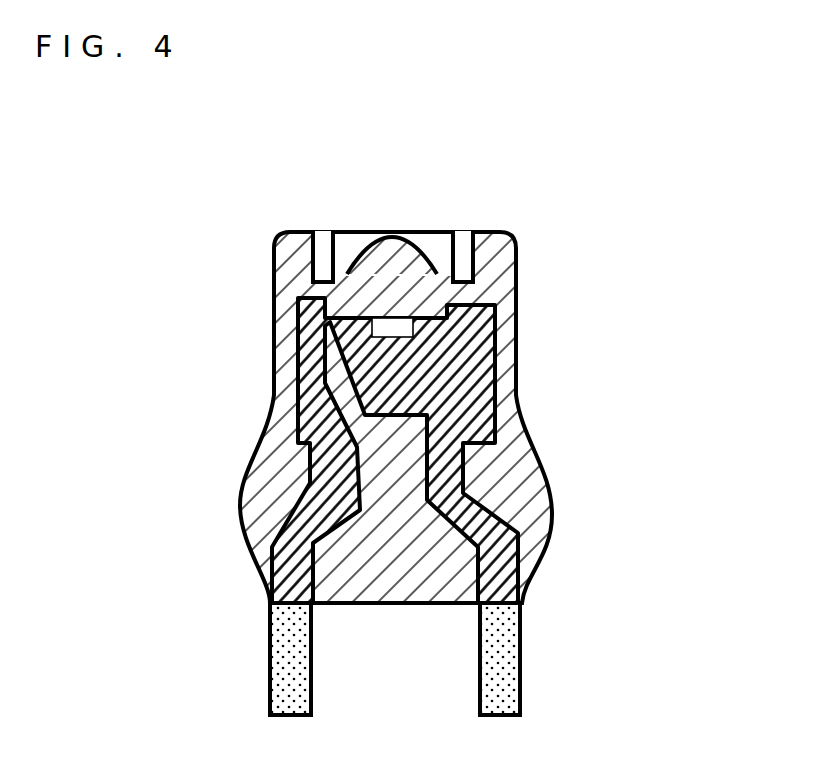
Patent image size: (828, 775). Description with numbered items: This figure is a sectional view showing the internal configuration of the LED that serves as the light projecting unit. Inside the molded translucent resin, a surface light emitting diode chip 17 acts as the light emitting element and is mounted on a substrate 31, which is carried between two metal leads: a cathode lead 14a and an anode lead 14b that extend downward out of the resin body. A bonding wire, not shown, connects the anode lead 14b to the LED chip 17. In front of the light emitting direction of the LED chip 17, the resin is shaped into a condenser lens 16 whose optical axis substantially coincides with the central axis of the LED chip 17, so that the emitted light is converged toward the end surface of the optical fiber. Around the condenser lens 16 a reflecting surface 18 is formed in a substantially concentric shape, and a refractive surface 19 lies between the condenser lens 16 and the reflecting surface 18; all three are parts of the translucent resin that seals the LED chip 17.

The condenser lens 16 is at (380, 230).
The refractive surface 19 is at (437, 230).
The reflecting surface 18 is at (450, 232).
The surface light emitting diode chip 17 is at (415, 300).
The substrate 31 is at (455, 365).
The cathode lead 14a is at (278, 648).
The anode lead 14b is at (493, 642).